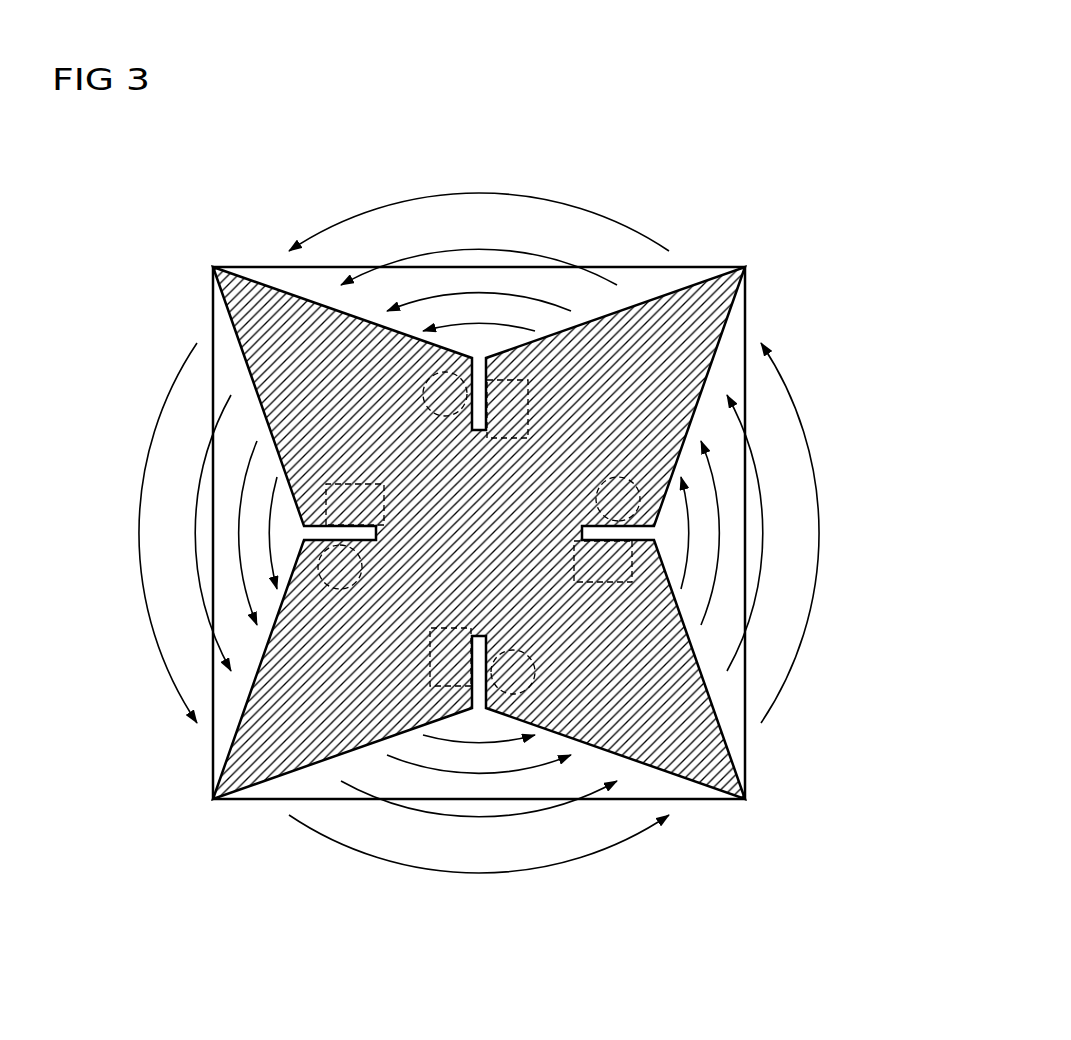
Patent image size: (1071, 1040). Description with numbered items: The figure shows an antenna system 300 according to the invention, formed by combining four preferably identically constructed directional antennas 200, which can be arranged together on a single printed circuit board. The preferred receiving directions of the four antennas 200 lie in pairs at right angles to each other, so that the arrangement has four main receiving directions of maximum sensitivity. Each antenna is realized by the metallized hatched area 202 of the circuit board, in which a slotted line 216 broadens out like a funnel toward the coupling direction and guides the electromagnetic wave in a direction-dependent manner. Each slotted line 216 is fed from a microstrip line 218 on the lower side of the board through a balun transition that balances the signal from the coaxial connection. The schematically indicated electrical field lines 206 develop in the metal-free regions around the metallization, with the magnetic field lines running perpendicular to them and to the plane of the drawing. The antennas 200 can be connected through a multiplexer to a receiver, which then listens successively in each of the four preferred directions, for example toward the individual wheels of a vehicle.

The Vivaldi antenna 200 is at (494, 155).
The hatched area 202 is at (715, 752).
The electrical field lines 206 is at (540, 197).
The slotted line 216 is at (481, 433).
The microstrip line 218 is at (355, 484).
The antenna system 300 is at (774, 170).